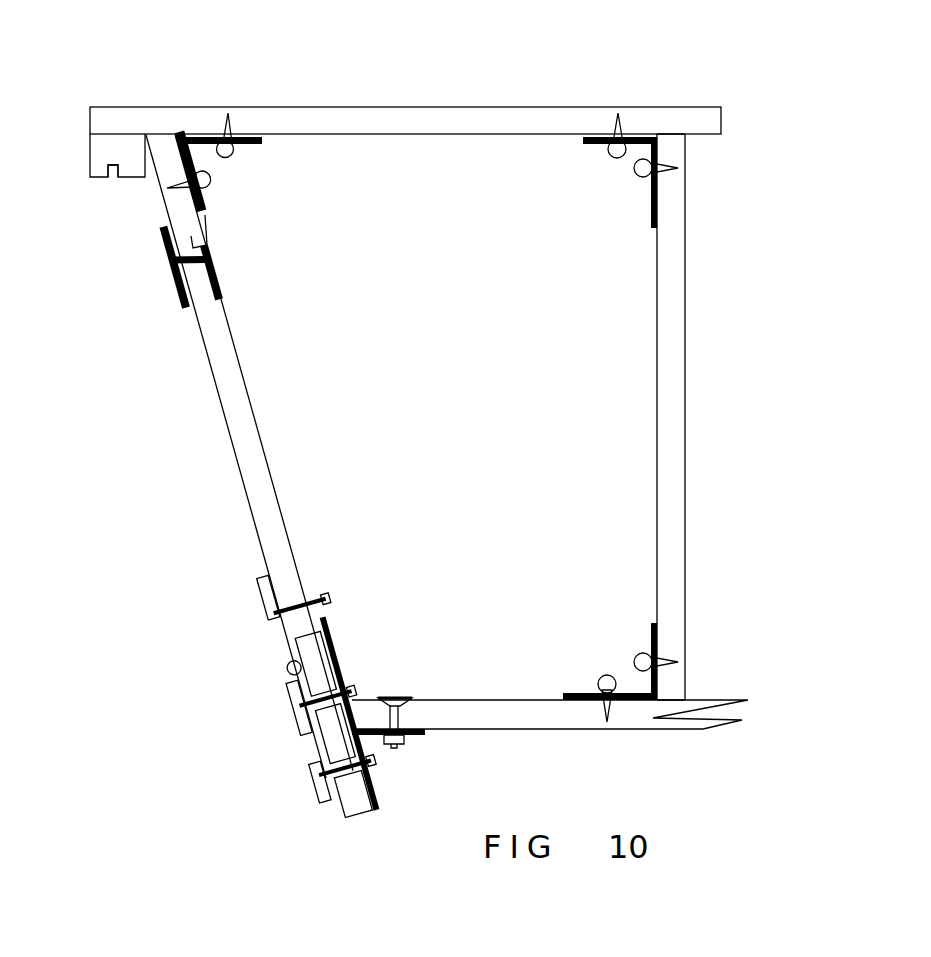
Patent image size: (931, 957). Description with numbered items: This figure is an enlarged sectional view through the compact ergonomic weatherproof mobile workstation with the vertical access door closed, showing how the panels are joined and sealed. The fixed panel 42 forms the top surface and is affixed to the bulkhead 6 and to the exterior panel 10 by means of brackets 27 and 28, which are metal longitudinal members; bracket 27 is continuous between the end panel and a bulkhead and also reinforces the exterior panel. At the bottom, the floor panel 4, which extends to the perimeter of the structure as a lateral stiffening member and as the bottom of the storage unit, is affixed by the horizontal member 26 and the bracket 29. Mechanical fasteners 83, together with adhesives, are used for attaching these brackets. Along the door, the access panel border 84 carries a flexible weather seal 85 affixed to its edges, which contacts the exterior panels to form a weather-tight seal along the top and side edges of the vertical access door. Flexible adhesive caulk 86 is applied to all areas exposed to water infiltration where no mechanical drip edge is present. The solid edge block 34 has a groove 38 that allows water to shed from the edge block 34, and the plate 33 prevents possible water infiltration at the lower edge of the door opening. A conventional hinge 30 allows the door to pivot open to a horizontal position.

The floor panel 4 is at (508, 708).
The bulkhead 6 is at (677, 427).
The exterior panel 10 is at (188, 240).
The horizontal member 26 is at (380, 813).
The bracket 27 is at (205, 137).
The bracket 28 is at (641, 133).
The bracket 29 is at (657, 632).
The conventional hinge 30 is at (290, 665).
The plate 33 is at (340, 660).
The solid edge block 34 is at (102, 163).
The groove 38 is at (115, 175).
The fixed panel 42 is at (367, 118).
The mechanical fasteners 83 is at (618, 158).
The access panel border 84 is at (177, 283).
The flexible weather seal 85 is at (177, 235).
The flexible adhesive caulk 86 is at (687, 148).